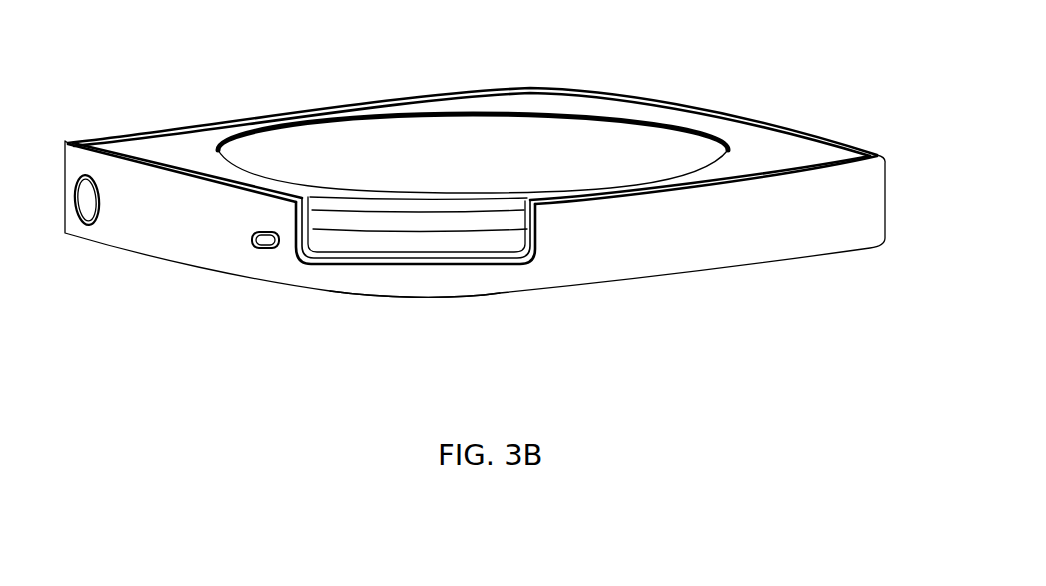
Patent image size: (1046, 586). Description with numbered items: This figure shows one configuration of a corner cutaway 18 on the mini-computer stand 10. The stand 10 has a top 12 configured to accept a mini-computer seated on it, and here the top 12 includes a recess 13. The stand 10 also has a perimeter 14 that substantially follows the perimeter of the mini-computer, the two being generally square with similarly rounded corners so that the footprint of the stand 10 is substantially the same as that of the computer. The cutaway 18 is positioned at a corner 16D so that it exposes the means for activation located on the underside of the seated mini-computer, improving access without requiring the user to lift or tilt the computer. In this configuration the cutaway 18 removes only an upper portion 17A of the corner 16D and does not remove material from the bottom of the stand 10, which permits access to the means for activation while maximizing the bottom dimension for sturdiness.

The mini-computer stand 10 is at (300, 38).
The top 12 is at (193, 159).
The recess 13 is at (462, 159).
The perimeter 14 is at (782, 225).
The corner 16D is at (423, 282).
The upper portion 17A is at (549, 228).
The cutaway 18 is at (354, 250).